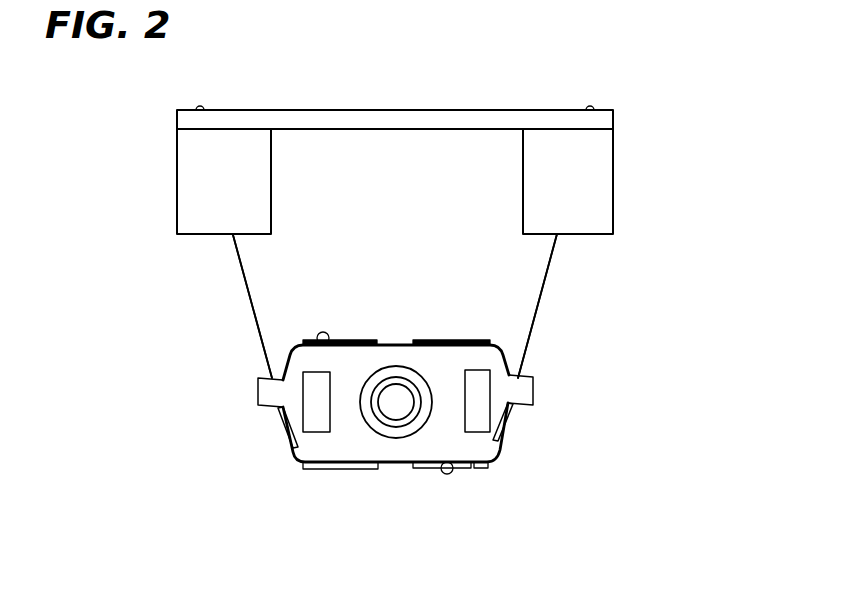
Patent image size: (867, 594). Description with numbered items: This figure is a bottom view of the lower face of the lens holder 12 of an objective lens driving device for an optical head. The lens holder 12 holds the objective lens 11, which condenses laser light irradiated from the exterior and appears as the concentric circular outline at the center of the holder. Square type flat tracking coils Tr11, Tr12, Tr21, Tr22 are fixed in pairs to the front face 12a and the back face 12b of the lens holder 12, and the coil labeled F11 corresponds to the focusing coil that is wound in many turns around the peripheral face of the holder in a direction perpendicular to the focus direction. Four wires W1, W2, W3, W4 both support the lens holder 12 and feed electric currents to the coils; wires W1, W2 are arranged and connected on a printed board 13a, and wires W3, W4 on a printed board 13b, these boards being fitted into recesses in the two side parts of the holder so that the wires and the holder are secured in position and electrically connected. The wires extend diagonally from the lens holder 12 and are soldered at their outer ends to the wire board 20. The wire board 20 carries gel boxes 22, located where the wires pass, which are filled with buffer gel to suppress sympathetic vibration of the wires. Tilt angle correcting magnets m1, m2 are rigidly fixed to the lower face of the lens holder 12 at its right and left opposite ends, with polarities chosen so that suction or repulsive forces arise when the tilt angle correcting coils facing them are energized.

The wire board 20 is at (388, 110).
The gel boxes 22 is at (178, 152).
The wire W1 is at (253, 318).
The wire W2 is at (231, 310).
The wire W3 is at (552, 273).
The wire W4 is at (591, 306).
The lens holder 12 is at (295, 453).
The front face 12a is at (443, 462).
The back face 12b is at (327, 344).
The objective lens 11 is at (398, 398).
The tilt angle correcting magnet m1 is at (318, 397).
The tilt angle correcting magnet m2 is at (480, 383).
The printed board 13a is at (512, 420).
The printed board 13b is at (280, 418).
The tracking coil Tr11 is at (472, 468).
The tracking coil Tr12 is at (317, 470).
The tracking coil Tr21 is at (463, 340).
The tracking coil Tr22 is at (360, 340).
The fuse terminal F11 is at (392, 463).